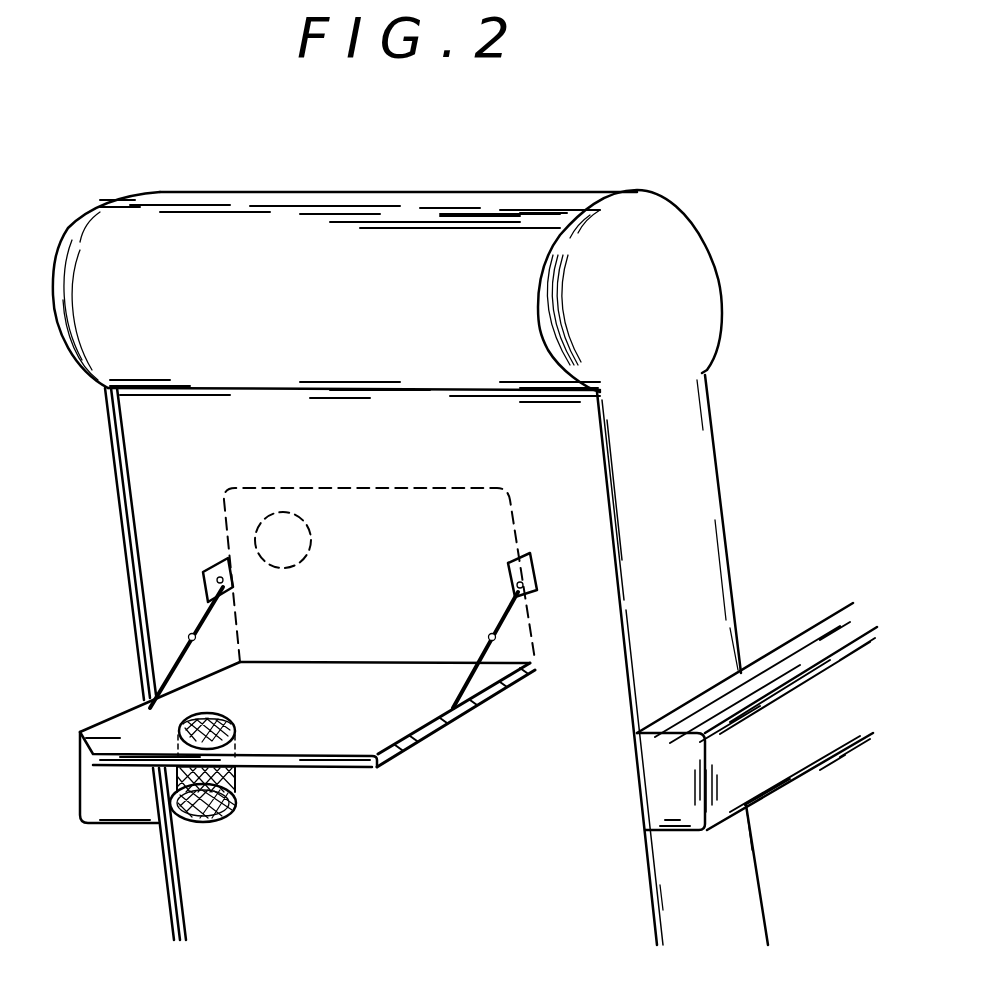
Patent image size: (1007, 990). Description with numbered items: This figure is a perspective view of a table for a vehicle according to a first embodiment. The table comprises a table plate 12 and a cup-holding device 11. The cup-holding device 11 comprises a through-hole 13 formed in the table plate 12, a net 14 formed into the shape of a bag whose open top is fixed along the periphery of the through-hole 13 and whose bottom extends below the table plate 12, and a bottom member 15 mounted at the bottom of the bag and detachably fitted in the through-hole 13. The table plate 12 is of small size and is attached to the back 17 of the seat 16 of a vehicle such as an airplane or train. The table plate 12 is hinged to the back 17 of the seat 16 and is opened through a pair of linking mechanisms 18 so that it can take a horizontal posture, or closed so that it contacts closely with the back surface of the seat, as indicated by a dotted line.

The cup-holding device 11 is at (276, 811).
The table plate 12 is at (367, 722).
The through-hole 13 is at (220, 712).
The net 14 is at (237, 783).
The bottom member 15 is at (190, 820).
The seat 16 is at (744, 435).
The back 17 is at (598, 626).
The linking mechanism 18 is at (187, 648).